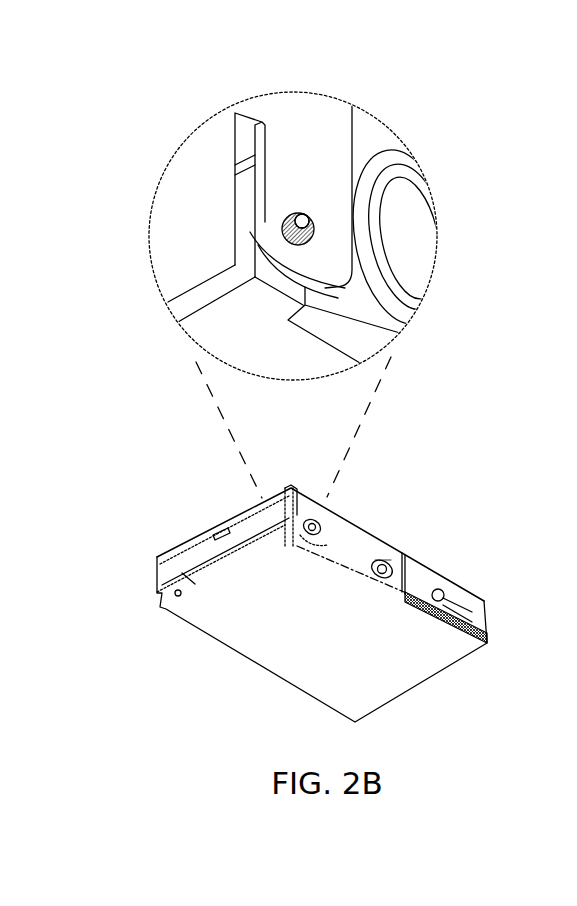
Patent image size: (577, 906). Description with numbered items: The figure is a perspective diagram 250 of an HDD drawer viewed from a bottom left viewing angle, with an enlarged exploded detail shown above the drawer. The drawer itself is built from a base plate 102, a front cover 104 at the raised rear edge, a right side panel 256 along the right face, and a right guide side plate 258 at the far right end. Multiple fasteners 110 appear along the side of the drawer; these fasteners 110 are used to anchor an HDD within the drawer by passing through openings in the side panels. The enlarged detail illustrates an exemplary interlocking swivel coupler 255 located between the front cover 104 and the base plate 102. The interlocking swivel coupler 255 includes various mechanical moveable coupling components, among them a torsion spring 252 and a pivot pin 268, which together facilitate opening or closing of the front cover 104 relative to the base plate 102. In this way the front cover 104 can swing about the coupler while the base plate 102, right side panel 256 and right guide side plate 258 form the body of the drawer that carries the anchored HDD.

The base plate 102 is at (229, 339).
The front cover 104 is at (282, 161).
The fasteners 110 is at (327, 525).
The perspective diagram 250 is at (319, 56).
The torsion spring 252 is at (283, 232).
The interlocking swivel coupler 255 is at (153, 193).
The right side panel 256 is at (385, 546).
The right guide side plate 258 is at (480, 602).
The pivot pin 268 is at (306, 208).